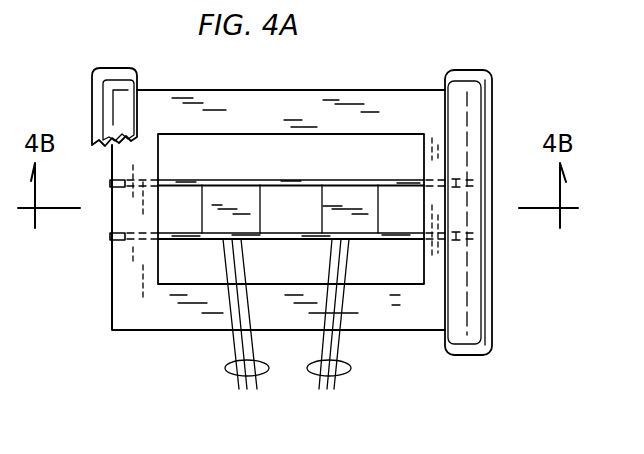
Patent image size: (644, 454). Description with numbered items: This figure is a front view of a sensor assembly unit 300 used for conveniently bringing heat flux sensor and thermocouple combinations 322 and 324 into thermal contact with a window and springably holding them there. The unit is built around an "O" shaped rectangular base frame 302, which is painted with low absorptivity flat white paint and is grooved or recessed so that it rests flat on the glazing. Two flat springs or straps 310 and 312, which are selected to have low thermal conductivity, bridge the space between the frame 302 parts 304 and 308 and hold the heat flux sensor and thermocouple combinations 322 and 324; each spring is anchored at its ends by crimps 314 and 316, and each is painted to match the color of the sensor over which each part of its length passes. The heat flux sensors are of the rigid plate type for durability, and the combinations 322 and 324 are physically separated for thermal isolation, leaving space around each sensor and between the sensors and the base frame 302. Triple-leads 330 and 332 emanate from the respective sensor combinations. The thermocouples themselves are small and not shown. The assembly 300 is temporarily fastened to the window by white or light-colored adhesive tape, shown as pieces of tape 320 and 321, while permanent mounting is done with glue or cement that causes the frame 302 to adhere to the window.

The sensor assembly unit 300 is at (553, 46).
The base frame 302 is at (308, 92).
The frame part 304 is at (436, 282).
The frame part 308 is at (128, 292).
The flat spring 310 is at (404, 183).
The flat spring 312 is at (402, 240).
The crimp 314 is at (470, 183).
The crimp 316 is at (110, 183).
The piece of tape 320 is at (476, 350).
The piece of tape 321 is at (103, 70).
The heat flux sensor and thermocouple combination 322 is at (263, 156).
The heat flux sensor and thermocouple combination 324 is at (341, 200).
The triple-lead 330 is at (350, 368).
The triple-lead 332 is at (225, 367).